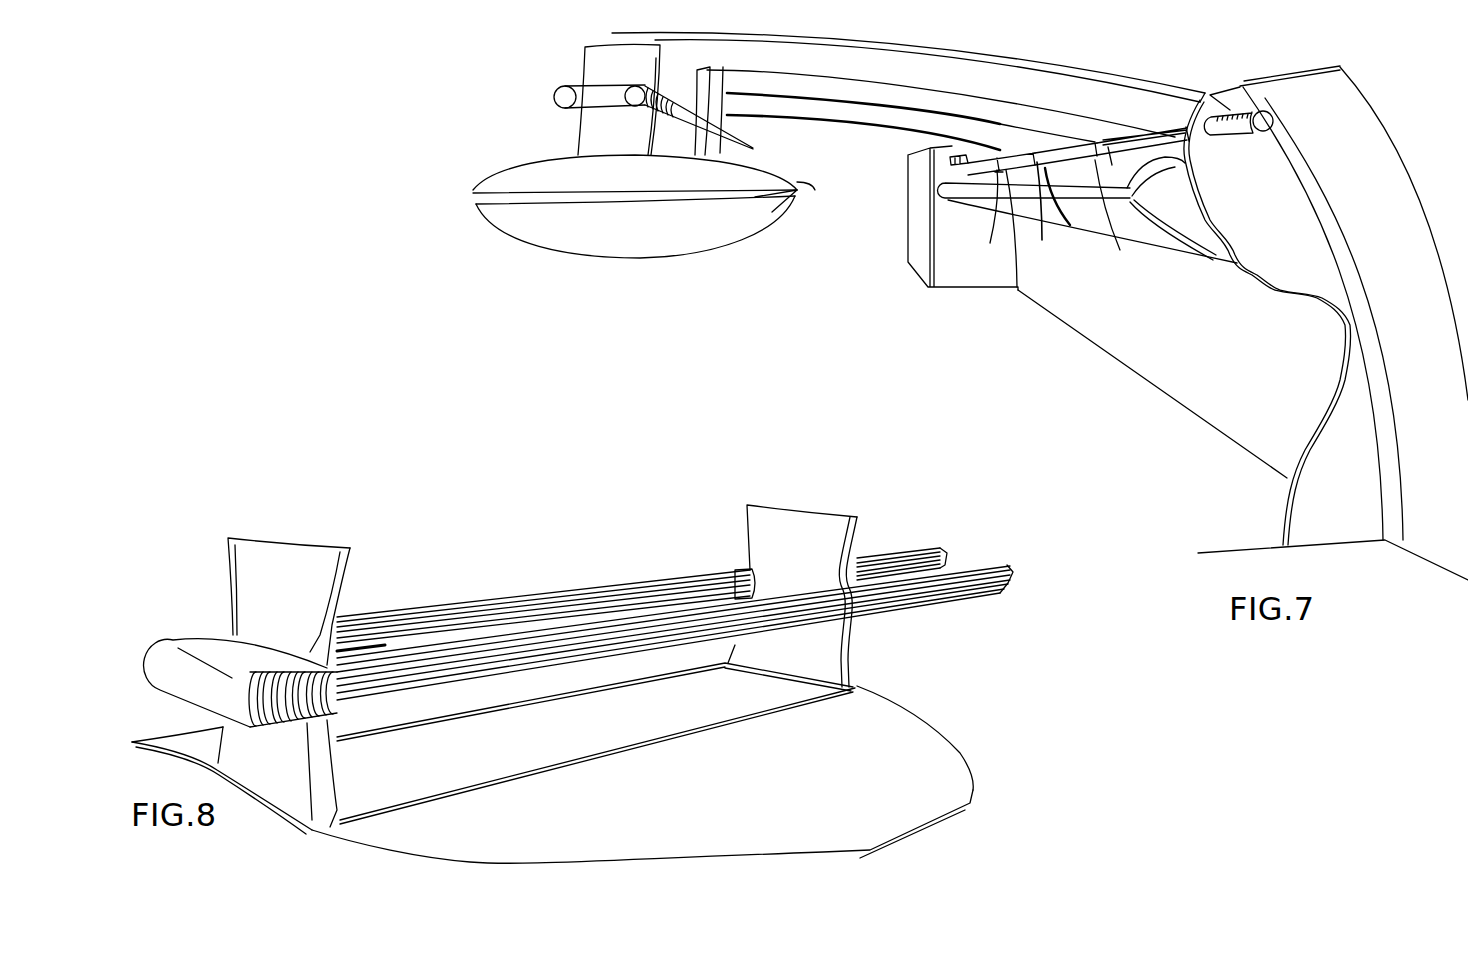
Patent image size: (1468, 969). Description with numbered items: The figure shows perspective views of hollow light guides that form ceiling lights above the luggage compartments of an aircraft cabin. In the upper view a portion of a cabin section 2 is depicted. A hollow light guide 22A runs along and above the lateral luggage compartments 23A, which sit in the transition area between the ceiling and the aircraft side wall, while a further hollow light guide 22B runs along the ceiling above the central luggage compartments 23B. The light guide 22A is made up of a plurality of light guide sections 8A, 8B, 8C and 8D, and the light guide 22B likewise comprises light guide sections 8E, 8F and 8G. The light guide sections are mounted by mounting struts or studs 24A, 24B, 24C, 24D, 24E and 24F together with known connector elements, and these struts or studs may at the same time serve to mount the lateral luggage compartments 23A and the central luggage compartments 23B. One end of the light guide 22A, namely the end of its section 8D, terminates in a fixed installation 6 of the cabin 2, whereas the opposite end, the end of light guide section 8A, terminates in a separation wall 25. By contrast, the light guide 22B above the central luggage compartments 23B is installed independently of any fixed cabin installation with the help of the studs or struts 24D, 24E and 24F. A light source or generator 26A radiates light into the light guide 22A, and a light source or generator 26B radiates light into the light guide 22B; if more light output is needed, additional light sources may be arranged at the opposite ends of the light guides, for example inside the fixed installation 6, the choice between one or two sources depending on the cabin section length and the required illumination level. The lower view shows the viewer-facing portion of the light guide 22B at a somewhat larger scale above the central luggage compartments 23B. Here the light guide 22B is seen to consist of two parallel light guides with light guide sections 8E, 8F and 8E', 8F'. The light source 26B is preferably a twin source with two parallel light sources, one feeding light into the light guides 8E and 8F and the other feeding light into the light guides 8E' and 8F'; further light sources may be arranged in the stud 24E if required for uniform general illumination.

In FIG. 7, the cabin section 2 is at (1202, 374).
In FIG. 7, the fixed installation 6 is at (908, 209).
In FIG. 7, the light guide section 8A is at (1130, 135).
In FIG. 7, the light guide section 8B is at (1063, 147).
In FIG. 7, the light guide section 8C is at (1013, 153).
In FIG. 7, the light guide section 8D is at (950, 161).
In FIG. 7, the light guide section 8E is at (921, 79).
In FIG. 8, the light guide section 8E is at (673, 633).
In FIG. 7, the light guide section 8F is at (908, 77).
In FIG. 8, the light guide section 8F is at (990, 606).
In FIG. 7, the light guide section 8G is at (717, 153).
In FIG. 8, the light guide section 8E' is at (546, 586).
In FIG. 8, the light guide section 8F' is at (902, 543).
In FIG. 7, the hollow light guide 22A is at (1137, 110).
In FIG. 7, the hollow light guide 22B is at (760, 139).
In FIG. 8, the hollow light guide 22B is at (548, 550).
In FIG. 7, the lateral luggage compartments 23A is at (1128, 192).
In FIG. 7, the central luggage compartments 23B is at (620, 250).
In FIG. 8, the central luggage compartments 23B is at (750, 774).
In FIG. 7, the mounting strut or stud 24A is at (1120, 250).
In FIG. 7, the mounting strut or stud 24B is at (1042, 240).
In FIG. 7, the mounting strut or stud 24C is at (990, 243).
In FIG. 7, the mounting strut or stud 24D is at (642, 147).
In FIG. 8, the mounting strut or stud 24D is at (312, 598).
In FIG. 7, the mounting strut or stud 24E is at (687, 152).
In FIG. 8, the mounting strut or stud 24E is at (817, 535).
In FIG. 7, the mounting strut or stud 24F is at (813, 190).
In FIG. 7, the separation wall 25 is at (1272, 241).
In FIG. 7, the light source or generator 26A is at (1277, 119).
In FIG. 7, the light source or generator 26B is at (588, 96).
In FIG. 8, the light source or generator 26B is at (221, 650).